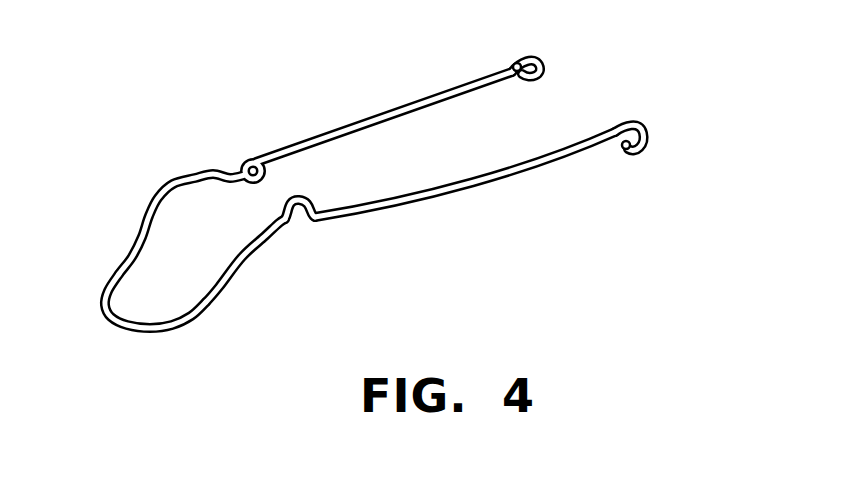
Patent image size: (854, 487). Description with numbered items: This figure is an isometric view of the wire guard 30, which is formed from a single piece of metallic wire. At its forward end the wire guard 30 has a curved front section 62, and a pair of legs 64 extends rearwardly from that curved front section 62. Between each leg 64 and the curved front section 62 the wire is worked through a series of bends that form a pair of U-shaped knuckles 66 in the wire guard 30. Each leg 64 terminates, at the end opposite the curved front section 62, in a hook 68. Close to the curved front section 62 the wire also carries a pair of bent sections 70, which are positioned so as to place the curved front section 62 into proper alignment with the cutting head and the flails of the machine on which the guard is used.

The wire guard 30 is at (210, 134).
The curved front section 62 is at (141, 322).
The legs 64 is at (377, 115).
The U-shaped knuckles 66 is at (244, 172).
The hook 68 is at (546, 62).
The bent sections 70 is at (139, 232).